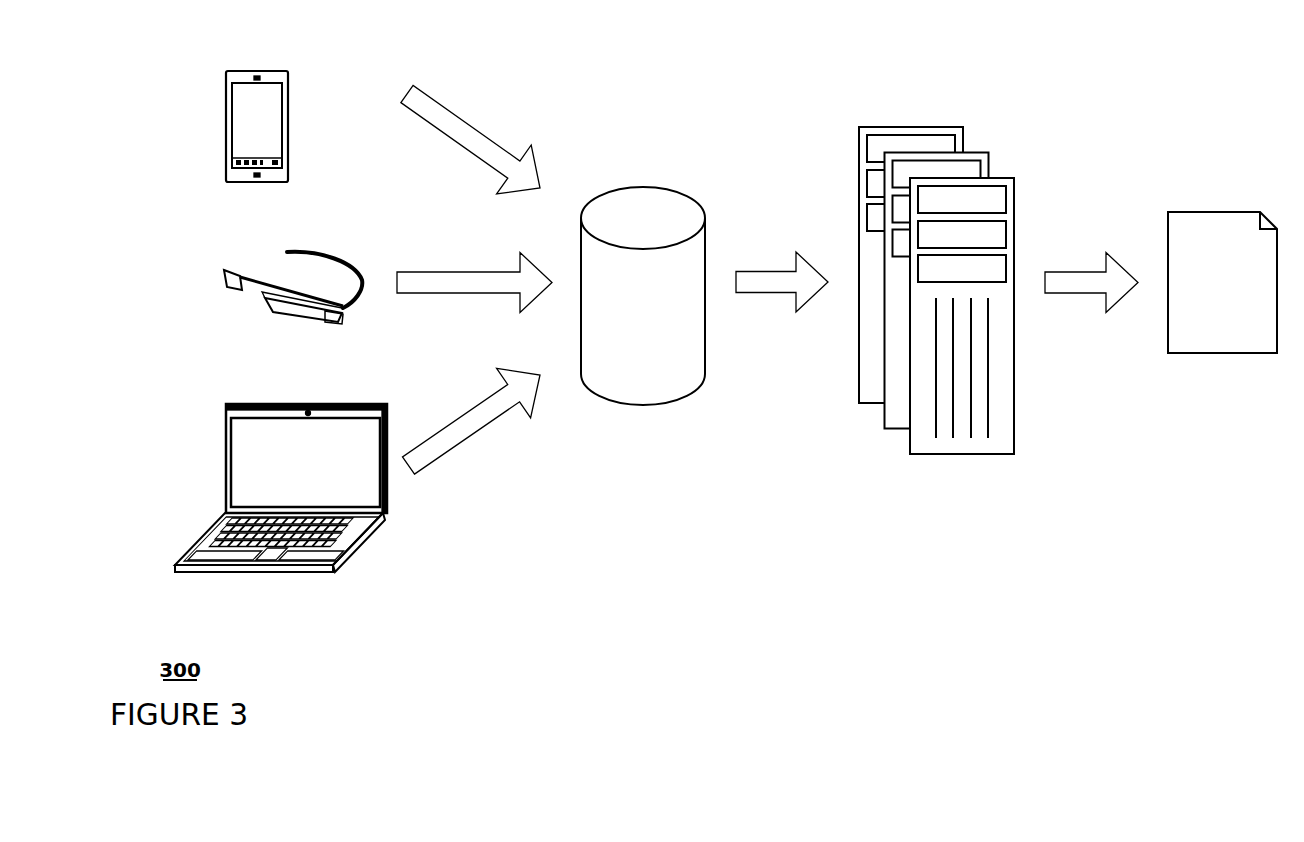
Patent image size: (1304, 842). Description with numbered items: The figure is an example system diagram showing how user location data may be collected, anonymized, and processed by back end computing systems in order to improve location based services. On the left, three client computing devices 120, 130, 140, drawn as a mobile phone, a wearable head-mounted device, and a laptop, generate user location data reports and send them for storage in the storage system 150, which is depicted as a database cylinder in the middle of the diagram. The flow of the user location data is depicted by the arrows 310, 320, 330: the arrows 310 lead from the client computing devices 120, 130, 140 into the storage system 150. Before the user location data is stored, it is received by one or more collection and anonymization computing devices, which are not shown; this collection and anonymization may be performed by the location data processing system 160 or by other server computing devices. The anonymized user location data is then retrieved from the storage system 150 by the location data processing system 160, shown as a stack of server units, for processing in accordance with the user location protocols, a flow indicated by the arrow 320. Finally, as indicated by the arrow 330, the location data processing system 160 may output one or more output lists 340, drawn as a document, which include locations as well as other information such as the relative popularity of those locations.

The client computing device 120 is at (225, 98).
The client computing device 130 is at (225, 283).
The client computing device 140 is at (225, 468).
The storage system 150 is at (627, 402).
The location data processing system 160 is at (882, 415).
The arrow 310 is at (537, 177).
The arrow 320 is at (793, 302).
The arrow 330 is at (1105, 302).
The output list 340 is at (1167, 342).